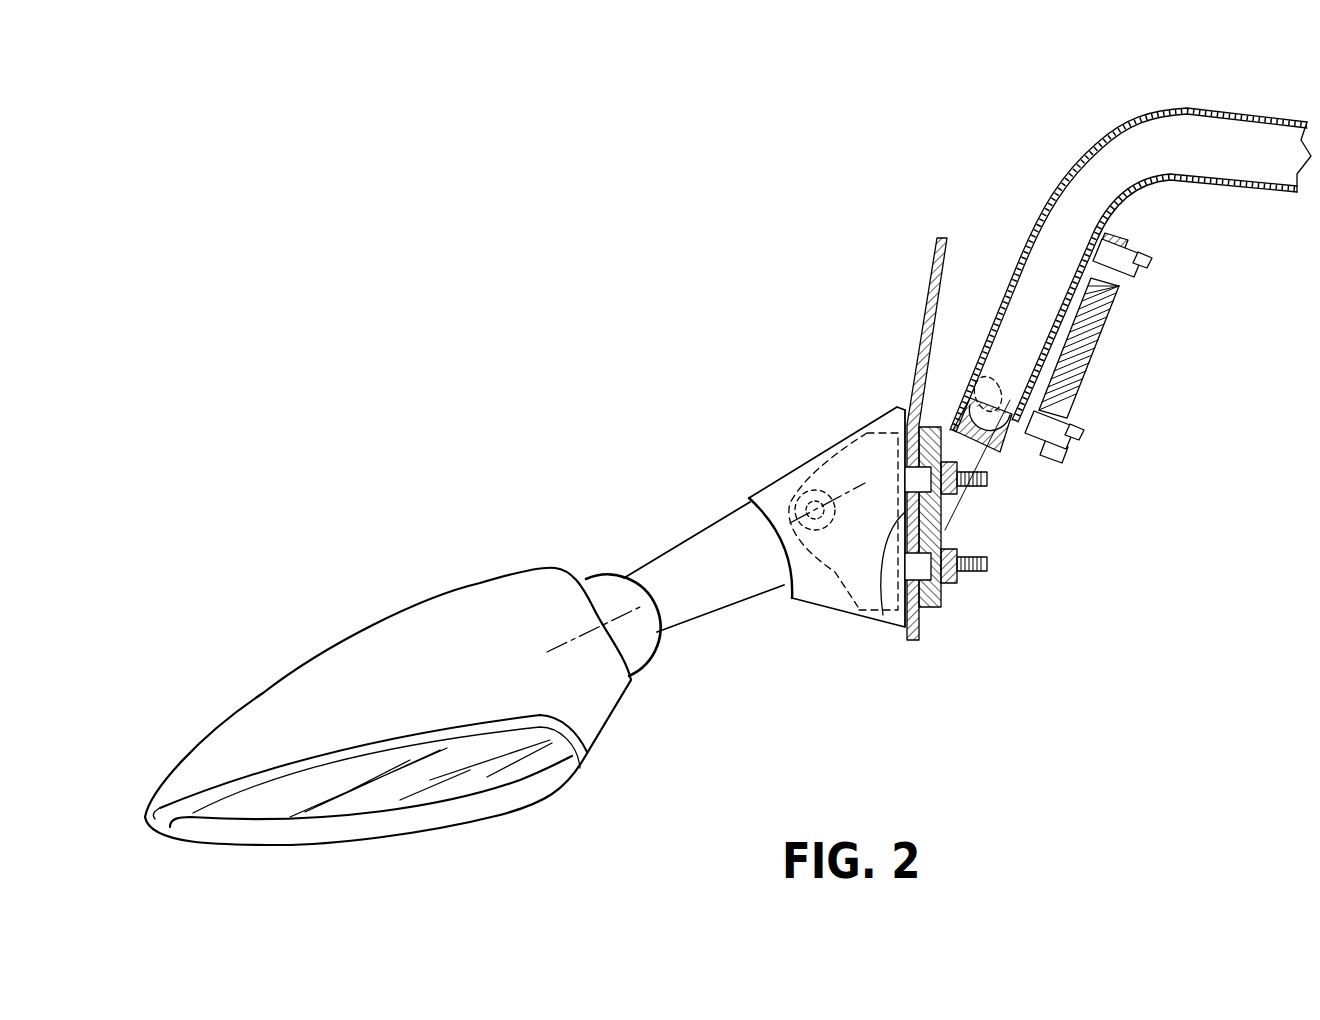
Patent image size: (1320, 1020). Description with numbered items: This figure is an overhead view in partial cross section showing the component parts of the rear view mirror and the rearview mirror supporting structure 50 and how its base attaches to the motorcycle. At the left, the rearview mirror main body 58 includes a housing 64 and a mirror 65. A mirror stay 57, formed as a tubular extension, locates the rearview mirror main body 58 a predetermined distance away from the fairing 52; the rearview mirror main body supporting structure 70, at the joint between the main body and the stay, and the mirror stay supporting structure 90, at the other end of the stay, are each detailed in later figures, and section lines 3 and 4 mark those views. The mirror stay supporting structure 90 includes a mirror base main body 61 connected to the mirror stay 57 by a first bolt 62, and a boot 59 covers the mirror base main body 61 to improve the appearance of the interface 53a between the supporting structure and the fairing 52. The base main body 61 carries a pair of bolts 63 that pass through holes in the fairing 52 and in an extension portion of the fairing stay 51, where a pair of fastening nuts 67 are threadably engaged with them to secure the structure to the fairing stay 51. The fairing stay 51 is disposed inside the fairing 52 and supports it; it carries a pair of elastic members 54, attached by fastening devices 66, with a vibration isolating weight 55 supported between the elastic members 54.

The rearview mirror supporting structure 50 is at (578, 350).
The rearview mirror main body supporting structure 70 is at (448, 474).
The mirror stay supporting structure 90 is at (807, 354).
The rearview mirror main body 58 is at (390, 566).
The housing 64 is at (257, 693).
The mirror 65 is at (391, 790).
The mirror stay 57 is at (703, 530).
The boot 59 is at (787, 470).
The interface 53a is at (883, 615).
The mirror base main body 61 is at (860, 600).
The first bolt 62 is at (823, 555).
The fairing 52 is at (930, 272).
The bolts 63 is at (987, 482).
The fastening nuts 67 is at (948, 494).
The fairing stay 51 is at (1075, 160).
The elastic members 54 is at (1137, 245).
The vibration isolating weight 55 is at (1092, 358).
The fastening devices 66 is at (1145, 275).
The section line 3- 3 is at (568, 641).
The section line 4- 4 is at (733, 550).